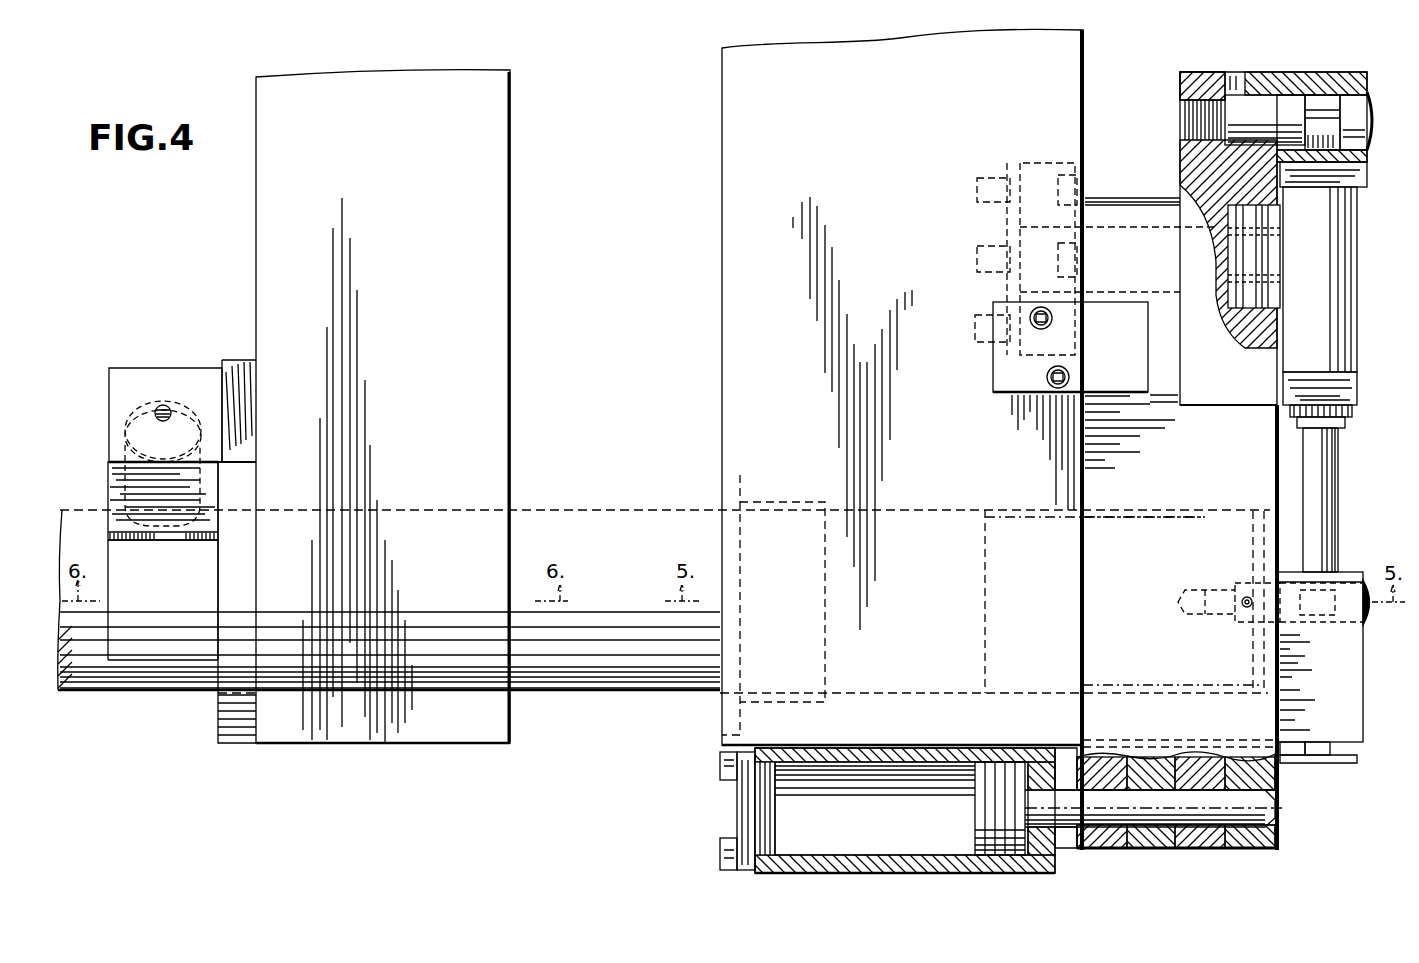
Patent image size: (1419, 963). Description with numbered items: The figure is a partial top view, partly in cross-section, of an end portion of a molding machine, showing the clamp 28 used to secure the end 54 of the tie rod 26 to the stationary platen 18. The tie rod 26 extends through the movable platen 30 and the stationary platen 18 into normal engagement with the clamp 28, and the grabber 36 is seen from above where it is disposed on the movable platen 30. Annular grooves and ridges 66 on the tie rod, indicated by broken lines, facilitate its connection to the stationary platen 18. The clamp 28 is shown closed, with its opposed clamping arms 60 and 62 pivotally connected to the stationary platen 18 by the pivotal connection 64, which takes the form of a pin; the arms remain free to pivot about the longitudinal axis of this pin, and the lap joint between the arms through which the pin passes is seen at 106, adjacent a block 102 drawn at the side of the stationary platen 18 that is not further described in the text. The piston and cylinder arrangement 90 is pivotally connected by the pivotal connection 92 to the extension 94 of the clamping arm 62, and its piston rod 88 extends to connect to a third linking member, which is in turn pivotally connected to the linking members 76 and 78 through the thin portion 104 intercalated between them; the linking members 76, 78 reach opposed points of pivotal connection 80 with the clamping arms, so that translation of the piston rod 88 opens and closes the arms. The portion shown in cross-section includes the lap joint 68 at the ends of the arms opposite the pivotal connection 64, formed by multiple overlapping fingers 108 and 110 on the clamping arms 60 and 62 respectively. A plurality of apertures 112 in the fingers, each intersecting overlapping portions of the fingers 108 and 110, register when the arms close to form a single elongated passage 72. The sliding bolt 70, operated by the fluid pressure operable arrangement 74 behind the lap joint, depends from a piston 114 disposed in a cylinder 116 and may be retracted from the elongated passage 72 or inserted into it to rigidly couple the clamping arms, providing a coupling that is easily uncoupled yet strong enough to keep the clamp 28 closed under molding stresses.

The stationary platen 18 is at (878, 296).
The tie rod 26 is at (614, 690).
The clamp 28 is at (1356, 856).
The movable platen 30 is at (428, 304).
The grabber 36 is at (167, 384).
The end of tie rod 54 is at (1130, 545).
The clamping arm 60 is at (1192, 472).
The clamping arm 62 is at (1227, 369).
The pivotal connection 64 is at (1118, 240).
The annular grooves and ridges 66 is at (1203, 517).
The lap joint 68 is at (1232, 824).
The sliding bolt 70 is at (1068, 800).
The elongated passage 72 is at (1289, 824).
The fluid pressure operable arrangement 74 is at (960, 856).
The linking member 76 is at (1336, 696).
The linking member 78 is at (1292, 750).
The pivotal connection 80 is at (1367, 615).
The piston rod 88 is at (1325, 503).
The piston and cylinder arrangement 90 is at (1327, 296).
The pivotal connection 92 is at (1357, 118).
The extension 94 is at (1212, 72).
The clamp block 102 is at (1005, 393).
The thin portion 104 is at (1320, 755).
The lap joint 106 is at (1186, 368).
The overlapping fingers 108 is at (1238, 755).
The overlapping fingers 110 is at (1150, 822).
The apertures 112 is at (1250, 848).
The piston 114 is at (980, 792).
The cylinder 116 is at (850, 842).